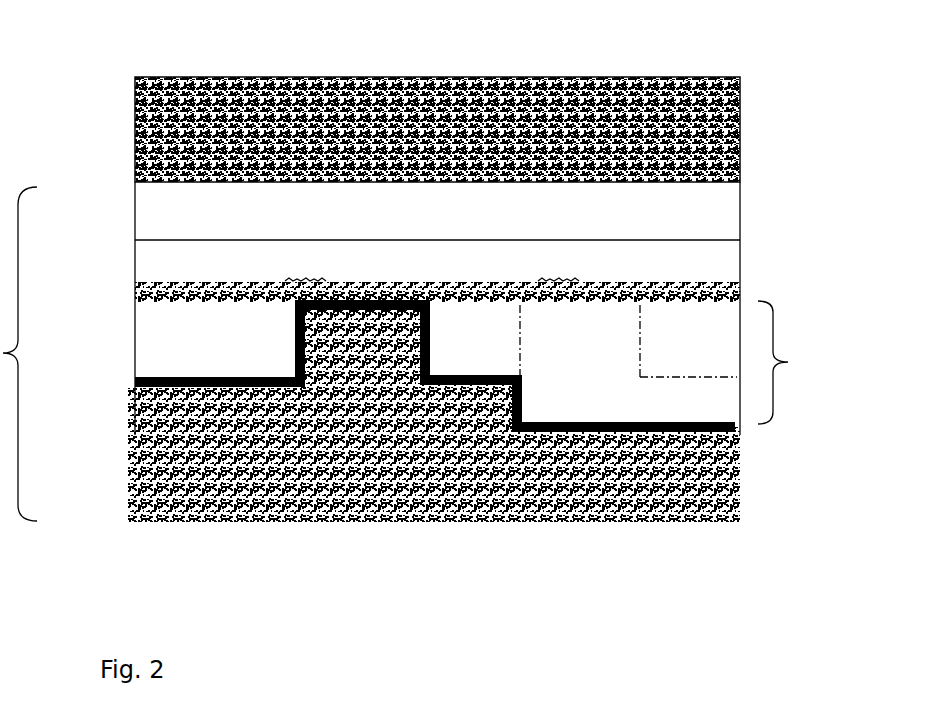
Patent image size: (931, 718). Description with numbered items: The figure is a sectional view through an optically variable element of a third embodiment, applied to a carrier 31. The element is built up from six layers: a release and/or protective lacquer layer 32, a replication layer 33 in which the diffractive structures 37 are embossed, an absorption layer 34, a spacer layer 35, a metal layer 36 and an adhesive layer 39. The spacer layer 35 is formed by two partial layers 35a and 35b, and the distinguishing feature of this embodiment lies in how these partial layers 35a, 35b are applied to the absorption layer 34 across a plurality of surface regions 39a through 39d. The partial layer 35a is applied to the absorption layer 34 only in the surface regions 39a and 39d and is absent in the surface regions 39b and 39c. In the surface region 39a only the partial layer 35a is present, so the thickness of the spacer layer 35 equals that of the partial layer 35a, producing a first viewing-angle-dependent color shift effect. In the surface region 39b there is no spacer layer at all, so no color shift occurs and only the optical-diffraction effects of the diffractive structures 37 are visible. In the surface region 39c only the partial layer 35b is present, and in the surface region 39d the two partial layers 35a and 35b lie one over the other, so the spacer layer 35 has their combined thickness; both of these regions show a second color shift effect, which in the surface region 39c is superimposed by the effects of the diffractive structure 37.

The carrier 31 is at (703, 163).
The release and/or protective lacquer layer 32 is at (135, 224).
The replication layer 33 is at (713, 245).
The absorption layer 34 is at (135, 295).
The spacer layer 35 is at (483, 368).
The partial layer 35a is at (228, 340).
The partial layer 35b is at (555, 397).
The metal layer 36 is at (153, 385).
The diffractive structures 37 is at (305, 267).
The adhesive layer 39 is at (675, 438).
The surface region 39a is at (195, 483).
The surface region 39b is at (338, 493).
The surface region 39c is at (547, 483).
The surface region 39d is at (677, 483).